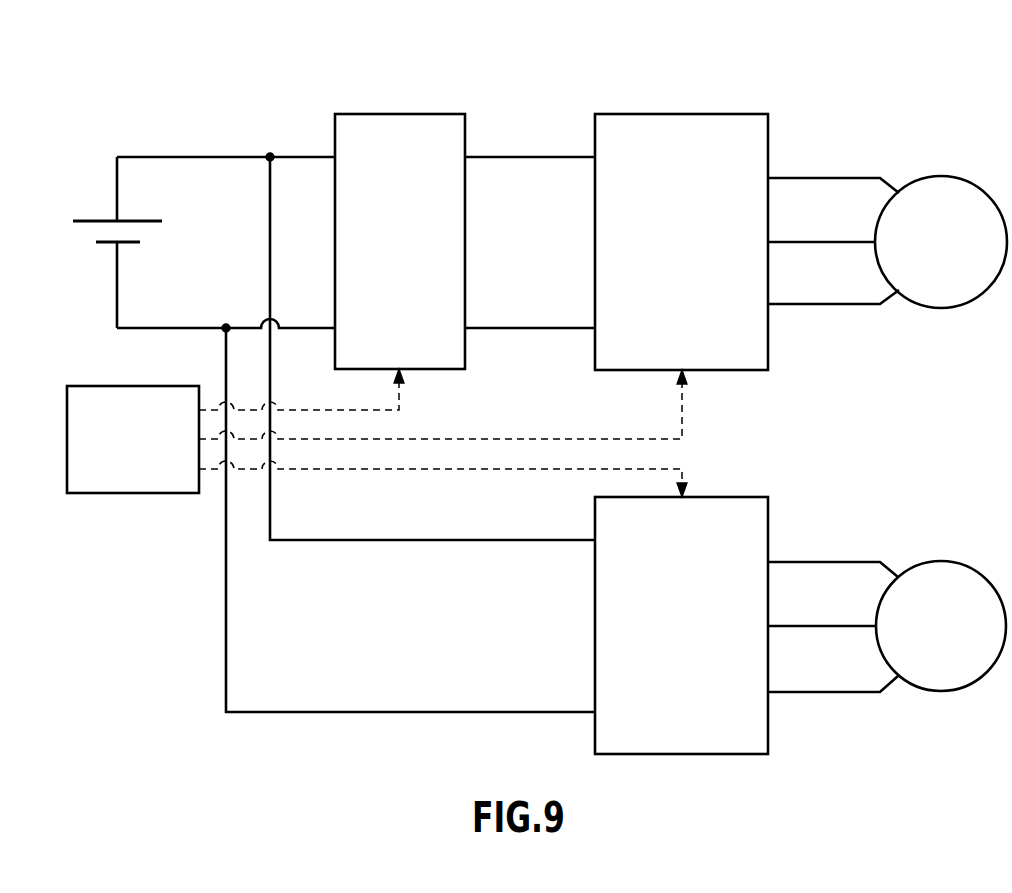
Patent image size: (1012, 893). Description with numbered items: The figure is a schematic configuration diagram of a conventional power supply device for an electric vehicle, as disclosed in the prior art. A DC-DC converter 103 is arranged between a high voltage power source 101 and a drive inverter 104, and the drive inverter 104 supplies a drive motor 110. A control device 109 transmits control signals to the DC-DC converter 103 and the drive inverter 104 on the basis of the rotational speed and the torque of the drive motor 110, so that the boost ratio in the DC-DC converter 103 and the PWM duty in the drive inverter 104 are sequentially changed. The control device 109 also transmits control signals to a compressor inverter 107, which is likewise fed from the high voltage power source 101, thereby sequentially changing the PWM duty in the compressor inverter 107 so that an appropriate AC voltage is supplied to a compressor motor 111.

The high voltage power source 101 is at (93, 217).
The DC-DC converter 103 is at (391, 114).
The drive inverter 104 is at (682, 114).
The compressor inverter 107 is at (770, 723).
The control device 109 is at (92, 385).
The drive motor 110 is at (941, 177).
The compressor motor 111 is at (941, 562).